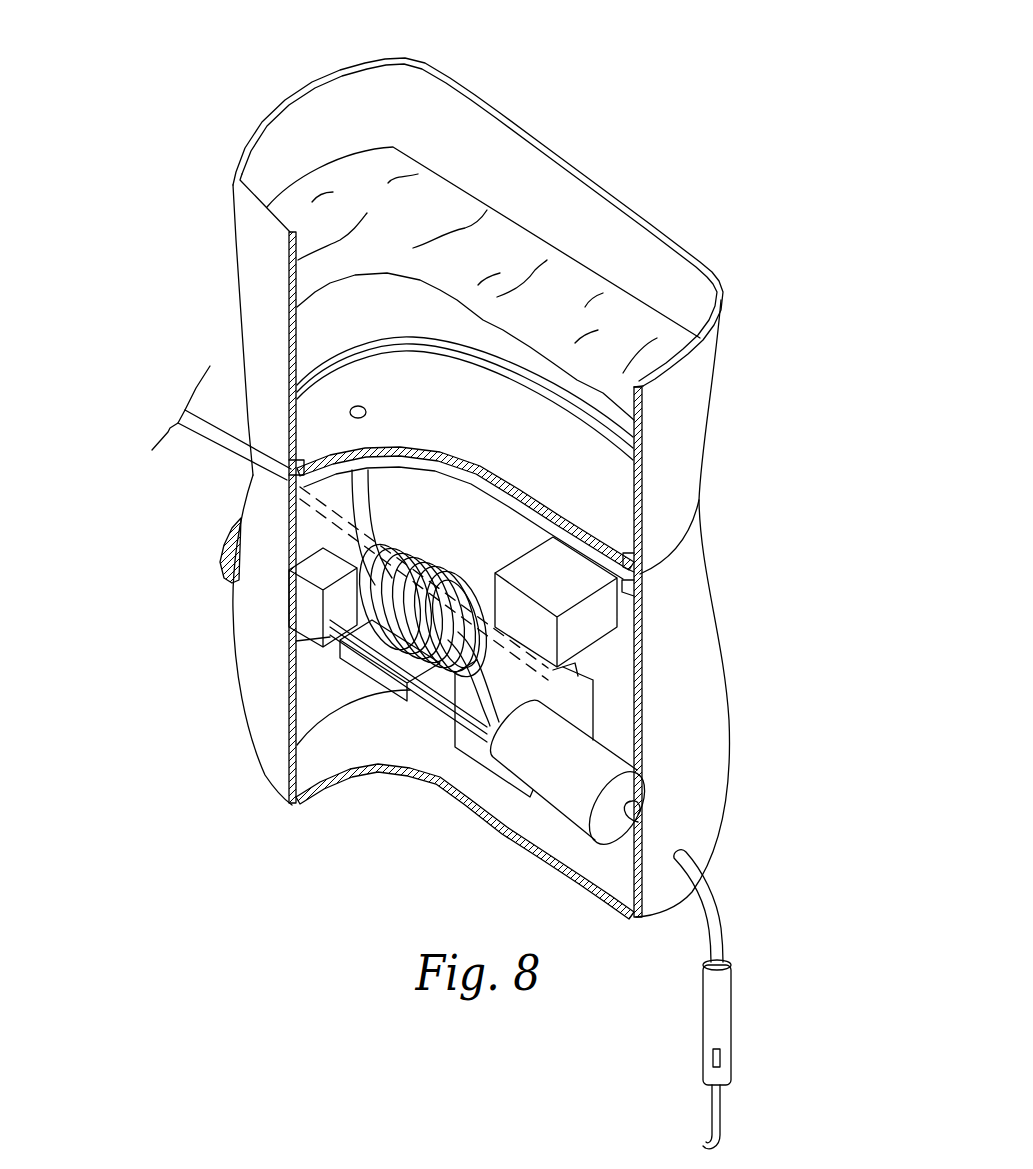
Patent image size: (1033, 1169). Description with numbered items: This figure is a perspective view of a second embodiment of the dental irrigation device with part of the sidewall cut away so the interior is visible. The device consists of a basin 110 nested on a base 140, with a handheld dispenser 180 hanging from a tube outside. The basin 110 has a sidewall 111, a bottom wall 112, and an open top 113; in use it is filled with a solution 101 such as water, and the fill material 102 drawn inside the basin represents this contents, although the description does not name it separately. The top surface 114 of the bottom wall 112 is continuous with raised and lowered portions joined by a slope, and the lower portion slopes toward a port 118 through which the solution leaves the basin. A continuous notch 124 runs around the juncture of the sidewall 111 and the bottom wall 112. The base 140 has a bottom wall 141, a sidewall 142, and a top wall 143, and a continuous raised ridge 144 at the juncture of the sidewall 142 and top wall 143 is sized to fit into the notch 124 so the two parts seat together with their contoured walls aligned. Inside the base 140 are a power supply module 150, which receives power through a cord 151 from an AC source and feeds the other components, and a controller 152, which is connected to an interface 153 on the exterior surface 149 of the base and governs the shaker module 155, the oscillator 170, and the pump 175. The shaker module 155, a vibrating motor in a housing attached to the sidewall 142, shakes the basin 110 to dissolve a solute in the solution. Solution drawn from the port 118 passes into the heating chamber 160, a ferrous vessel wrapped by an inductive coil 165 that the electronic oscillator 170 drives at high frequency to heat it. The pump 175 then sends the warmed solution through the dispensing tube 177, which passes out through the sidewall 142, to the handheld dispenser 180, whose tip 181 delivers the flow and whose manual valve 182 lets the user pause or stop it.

The solution 101 is at (643, 110).
The absorbent fragrance medium 102 is at (415, 215).
The basin 110 is at (322, 73).
The sidewall 111 is at (240, 278).
The bottom wall 112 is at (400, 363).
The open top 113 is at (517, 78).
The top surface 114 is at (435, 427).
The port 118 is at (350, 406).
The continuous notch 124 is at (633, 573).
The base 140 is at (711, 572).
The bottom wall 141 is at (325, 750).
The sidewall 142 is at (717, 727).
The top wall 143 is at (477, 467).
The continuous raised ridge 144 is at (638, 583).
The exterior surface 149 is at (240, 662).
The power supply module 150 is at (463, 747).
The cord 151 is at (177, 422).
The controller 152 is at (310, 645).
The interface 153 is at (220, 543).
The shaker module 155 is at (615, 625).
The heating chamber 160 is at (363, 600).
The inductive coil 165 is at (345, 614).
The oscillator 170 is at (390, 697).
The pump 175 is at (610, 762).
The dispensing tube 177 is at (720, 897).
The dispenser 180 is at (735, 1013).
The tip 181 is at (720, 1127).
The manual valve 182 is at (723, 1053).